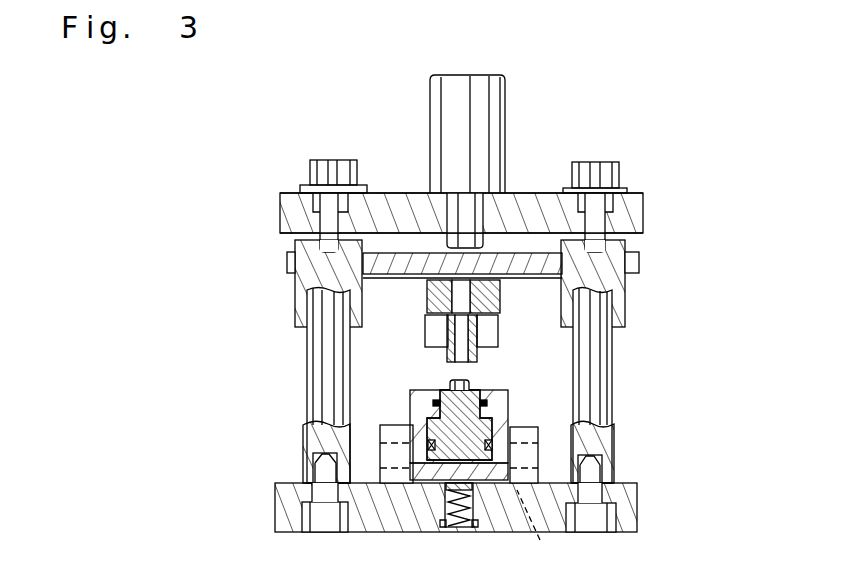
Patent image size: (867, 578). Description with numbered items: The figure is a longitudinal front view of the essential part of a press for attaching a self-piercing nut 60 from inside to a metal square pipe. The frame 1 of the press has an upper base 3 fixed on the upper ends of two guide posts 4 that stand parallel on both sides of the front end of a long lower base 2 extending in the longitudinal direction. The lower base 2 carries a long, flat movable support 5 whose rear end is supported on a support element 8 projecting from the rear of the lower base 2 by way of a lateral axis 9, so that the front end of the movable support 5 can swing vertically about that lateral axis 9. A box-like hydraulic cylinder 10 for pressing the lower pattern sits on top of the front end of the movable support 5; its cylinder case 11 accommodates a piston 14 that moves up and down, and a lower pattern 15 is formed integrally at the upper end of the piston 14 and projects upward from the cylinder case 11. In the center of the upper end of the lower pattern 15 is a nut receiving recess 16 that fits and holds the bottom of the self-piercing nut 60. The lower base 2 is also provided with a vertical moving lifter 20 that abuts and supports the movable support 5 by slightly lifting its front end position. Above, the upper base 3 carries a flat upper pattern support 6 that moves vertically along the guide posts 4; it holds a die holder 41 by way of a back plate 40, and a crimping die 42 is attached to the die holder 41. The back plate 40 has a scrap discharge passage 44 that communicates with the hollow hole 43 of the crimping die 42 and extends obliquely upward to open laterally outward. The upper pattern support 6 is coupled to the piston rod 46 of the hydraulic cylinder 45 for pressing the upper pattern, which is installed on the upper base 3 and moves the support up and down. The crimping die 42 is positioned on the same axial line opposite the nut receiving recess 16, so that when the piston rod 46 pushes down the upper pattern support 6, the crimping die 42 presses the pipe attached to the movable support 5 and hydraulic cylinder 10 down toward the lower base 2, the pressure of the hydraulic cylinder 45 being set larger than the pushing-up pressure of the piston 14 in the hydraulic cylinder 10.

The frame 1 is at (630, 315).
The lower base 2 is at (630, 510).
The upper base 3 is at (632, 198).
The guide posts 4 is at (312, 340).
The movable support 5 is at (480, 472).
The upper pattern support 6 is at (527, 262).
The support element 8 is at (525, 435).
The lateral axis 9 is at (538, 530).
The hydraulic cylinder for pressing the lower pattern 10 is at (458, 413).
The cylinder case 11 is at (411, 412).
The piston 14 is at (440, 480).
The lower pattern 15 is at (433, 402).
The nut receiving recess 16 is at (440, 392).
The vertical moving lifter 20 is at (445, 505).
The back plate 40 is at (487, 298).
The die holder 41 is at (488, 330).
The crimping die 42 is at (475, 353).
The hollow hole 43 is at (462, 328).
The scrap discharge passage 44 is at (462, 292).
The hydraulic cylinder for pressing the upper pattern 45 is at (447, 100).
The piston rod 46 is at (457, 217).
The self-piercing nut 60 is at (440, 377).